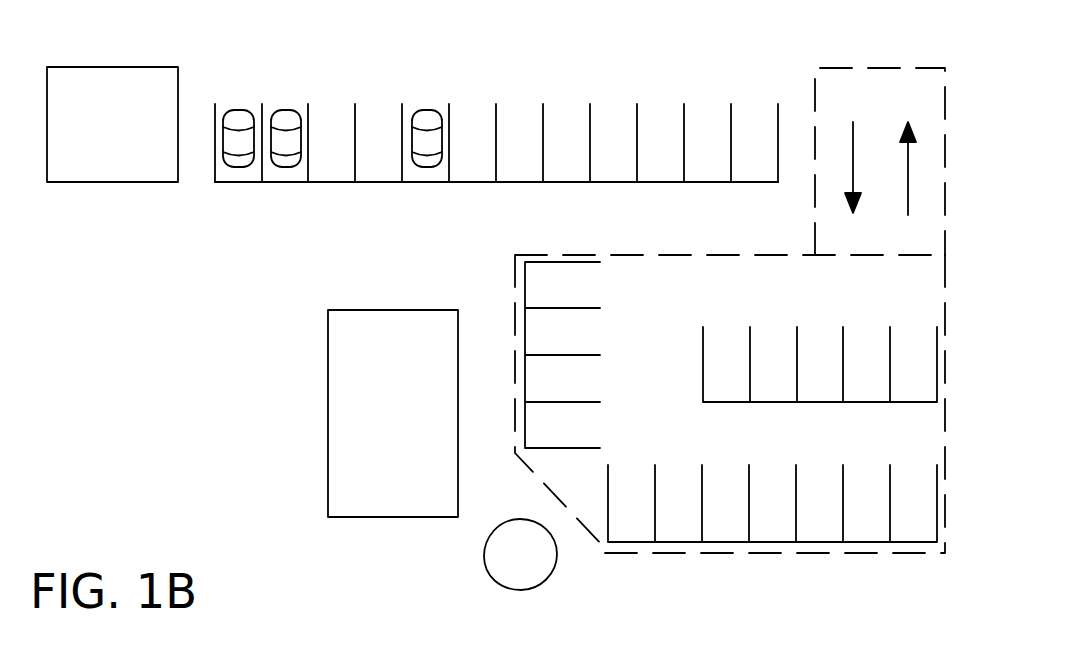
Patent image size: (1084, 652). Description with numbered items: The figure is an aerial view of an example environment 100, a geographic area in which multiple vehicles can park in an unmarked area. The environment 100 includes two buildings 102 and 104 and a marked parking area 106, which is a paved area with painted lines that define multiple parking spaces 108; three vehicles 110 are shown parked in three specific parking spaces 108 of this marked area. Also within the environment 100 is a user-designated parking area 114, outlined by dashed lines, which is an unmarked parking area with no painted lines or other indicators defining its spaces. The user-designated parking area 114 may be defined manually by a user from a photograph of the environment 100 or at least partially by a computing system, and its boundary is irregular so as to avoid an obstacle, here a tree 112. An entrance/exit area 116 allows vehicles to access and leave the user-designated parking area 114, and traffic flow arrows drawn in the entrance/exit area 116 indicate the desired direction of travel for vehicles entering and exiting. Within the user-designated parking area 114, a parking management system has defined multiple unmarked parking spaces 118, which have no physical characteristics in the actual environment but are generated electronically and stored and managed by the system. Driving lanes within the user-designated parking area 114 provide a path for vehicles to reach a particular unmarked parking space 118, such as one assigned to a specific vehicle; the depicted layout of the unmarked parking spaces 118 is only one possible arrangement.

The environment 100 is at (176, 403).
The building 102 is at (112, 124).
The building 104 is at (393, 413).
The marked parking area 106 is at (328, 83).
The parking spaces 108 is at (571, 158).
The vehicles 110 is at (418, 166).
The tree 112 is at (483, 553).
The user-designated parking area 114 is at (703, 270).
The entrance/exit area 116 is at (853, 93).
The unmarked parking spaces 118 is at (580, 383).